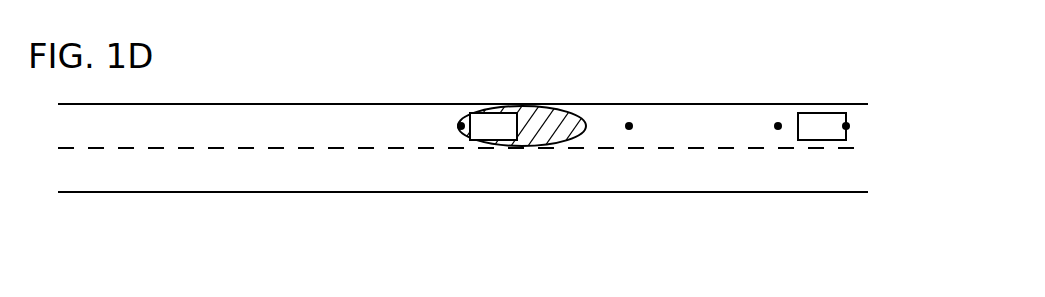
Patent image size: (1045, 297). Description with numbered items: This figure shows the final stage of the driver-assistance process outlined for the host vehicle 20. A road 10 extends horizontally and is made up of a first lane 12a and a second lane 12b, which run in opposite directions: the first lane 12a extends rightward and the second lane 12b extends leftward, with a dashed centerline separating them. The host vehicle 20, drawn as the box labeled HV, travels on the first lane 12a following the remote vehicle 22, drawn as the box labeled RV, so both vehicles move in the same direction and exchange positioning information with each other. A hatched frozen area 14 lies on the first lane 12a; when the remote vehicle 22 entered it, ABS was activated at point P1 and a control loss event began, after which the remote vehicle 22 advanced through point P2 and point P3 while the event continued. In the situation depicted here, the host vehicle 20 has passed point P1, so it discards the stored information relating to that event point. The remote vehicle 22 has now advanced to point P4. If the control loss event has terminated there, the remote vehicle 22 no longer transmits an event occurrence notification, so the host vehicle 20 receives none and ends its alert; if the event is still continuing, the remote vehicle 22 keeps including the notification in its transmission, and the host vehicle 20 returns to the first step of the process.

The road 10 is at (715, 103).
The first lane 12a is at (853, 115).
The second lane 12b is at (853, 177).
The frozen area 14 is at (547, 118).
The host vehicle 20 is at (504, 107).
The remote vehicle 22 is at (820, 113).
The point P1 is at (455, 126).
The point P2 is at (623, 126).
The point P3 is at (772, 126).
The point P4 is at (850, 130).